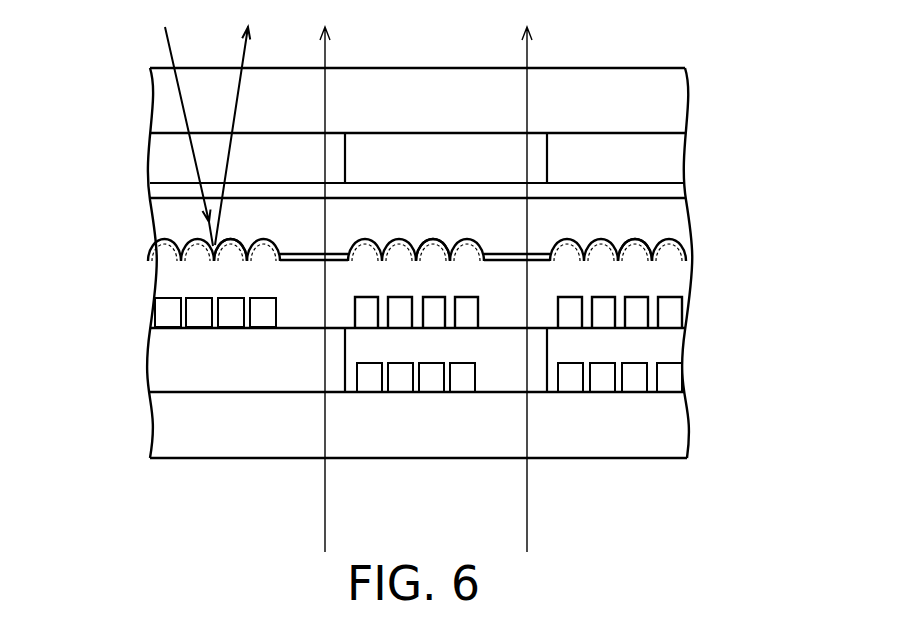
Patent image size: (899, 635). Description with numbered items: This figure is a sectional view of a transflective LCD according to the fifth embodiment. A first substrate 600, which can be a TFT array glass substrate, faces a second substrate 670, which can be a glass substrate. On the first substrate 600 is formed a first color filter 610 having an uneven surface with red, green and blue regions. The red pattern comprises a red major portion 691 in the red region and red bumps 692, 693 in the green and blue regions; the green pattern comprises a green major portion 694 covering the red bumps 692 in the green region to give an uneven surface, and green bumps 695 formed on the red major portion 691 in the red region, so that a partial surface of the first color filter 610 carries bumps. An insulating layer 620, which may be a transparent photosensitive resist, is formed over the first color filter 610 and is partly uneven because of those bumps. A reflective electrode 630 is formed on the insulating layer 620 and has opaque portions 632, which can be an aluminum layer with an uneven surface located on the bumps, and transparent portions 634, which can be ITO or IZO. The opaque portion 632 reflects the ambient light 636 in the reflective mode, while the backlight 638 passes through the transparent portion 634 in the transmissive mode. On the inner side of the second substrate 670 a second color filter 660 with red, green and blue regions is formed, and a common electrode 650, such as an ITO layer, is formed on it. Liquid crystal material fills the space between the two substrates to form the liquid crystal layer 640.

The first substrate 600 is at (665, 412).
The first color filter 610 is at (672, 357).
The insulating layer 620 is at (665, 279).
The reflective electrode 630 is at (160, 240).
The opaque portion 632 is at (236, 258).
The transparent portion 634 is at (302, 276).
The ambient light 636 is at (167, 48).
The backlight 638 is at (325, 537).
The liquid crystal layer 640 is at (680, 214).
The common electrode 650 is at (668, 190).
The second color filter 660 is at (662, 162).
The second substrate 670 is at (678, 98).
The red major portion 691 is at (172, 374).
The red bumps 692 is at (368, 393).
The red bumps 693 is at (568, 395).
The green major portion 694 is at (500, 378).
The green bumps 695 is at (155, 297).